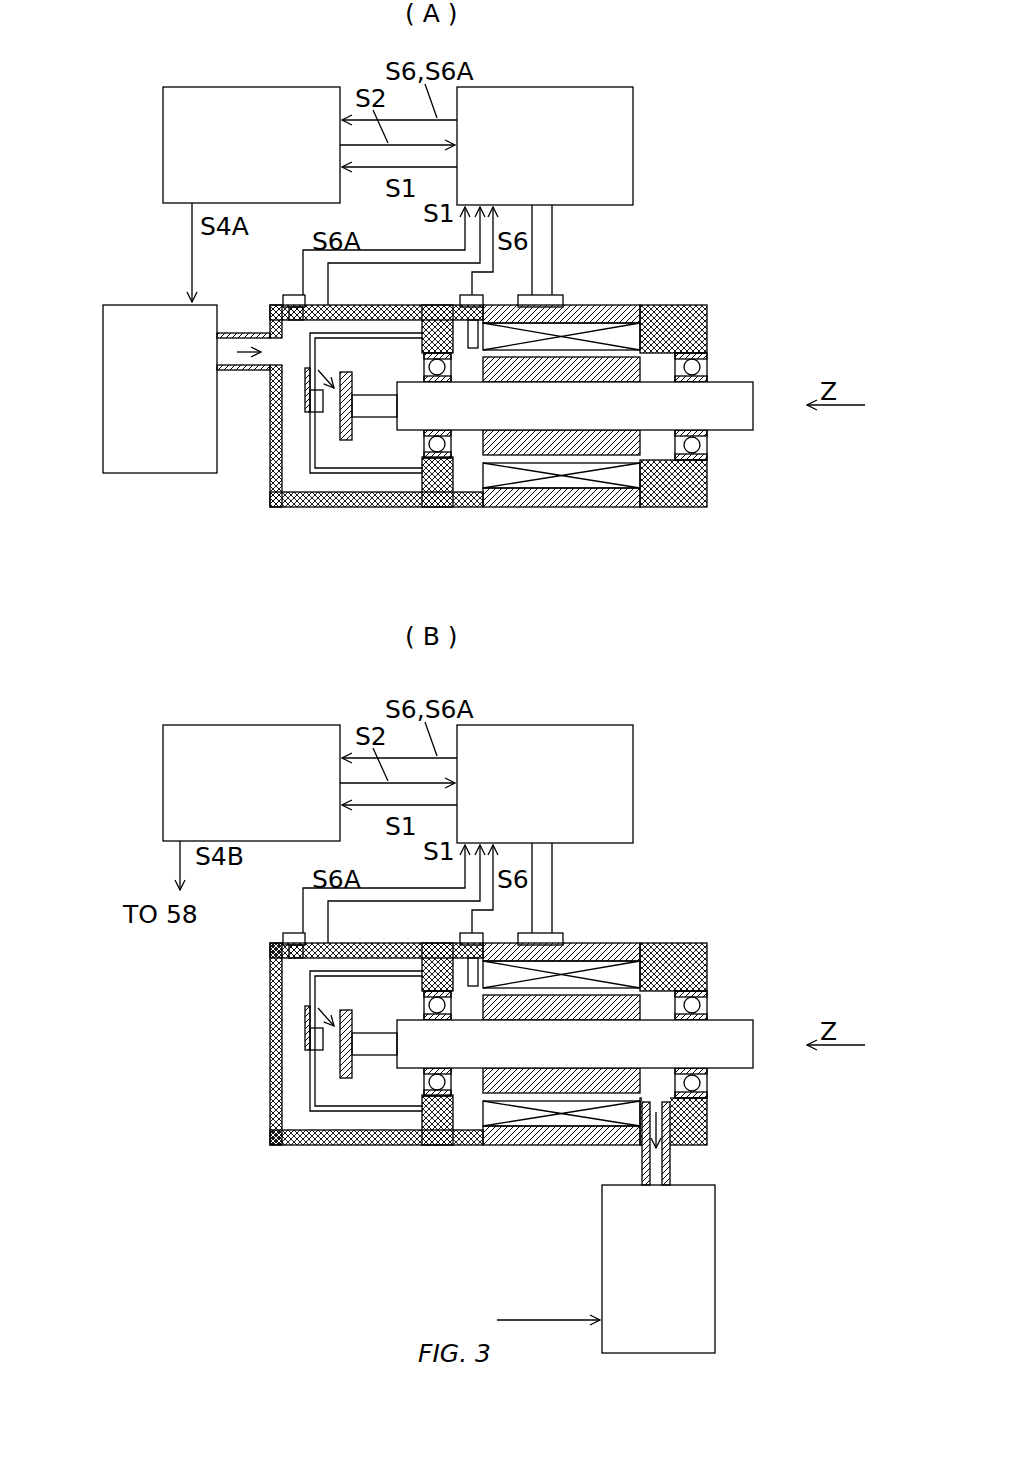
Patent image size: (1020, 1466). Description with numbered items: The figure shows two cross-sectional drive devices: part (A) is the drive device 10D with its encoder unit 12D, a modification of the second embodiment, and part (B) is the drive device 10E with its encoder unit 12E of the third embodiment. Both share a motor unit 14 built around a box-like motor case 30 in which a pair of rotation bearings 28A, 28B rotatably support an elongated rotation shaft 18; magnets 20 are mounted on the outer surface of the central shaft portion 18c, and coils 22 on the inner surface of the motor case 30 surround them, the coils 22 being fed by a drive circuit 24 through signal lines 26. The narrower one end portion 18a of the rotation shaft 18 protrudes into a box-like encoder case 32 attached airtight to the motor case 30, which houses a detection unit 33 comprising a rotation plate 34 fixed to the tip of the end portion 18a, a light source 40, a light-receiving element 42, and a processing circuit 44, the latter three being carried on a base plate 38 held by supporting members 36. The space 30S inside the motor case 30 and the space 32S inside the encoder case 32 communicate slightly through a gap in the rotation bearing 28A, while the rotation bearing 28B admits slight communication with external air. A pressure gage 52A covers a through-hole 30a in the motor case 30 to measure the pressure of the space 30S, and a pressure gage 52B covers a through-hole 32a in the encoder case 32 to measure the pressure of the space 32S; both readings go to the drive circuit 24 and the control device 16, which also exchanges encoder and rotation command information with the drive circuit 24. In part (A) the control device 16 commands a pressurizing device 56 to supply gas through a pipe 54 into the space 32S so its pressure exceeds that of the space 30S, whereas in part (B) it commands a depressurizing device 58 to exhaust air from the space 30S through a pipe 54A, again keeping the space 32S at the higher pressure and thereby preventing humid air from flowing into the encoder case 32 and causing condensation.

The control device 16 is at (163, 125).
The drive circuit 24 is at (633, 130).
The drive device 10D is at (791, 194).
The drive device 10E is at (794, 834).
The motor unit 14 is at (806, 327).
The encoder unit 12D is at (84, 450).
The encoder unit 12E is at (188, 1052).
The signal lines 26 is at (553, 247).
The motor case 30 is at (590, 305).
The through-hole 30a is at (555, 295).
The coils 22 is at (700, 305).
The magnets 20 is at (707, 338).
The rotation shaft 18 is at (745, 382).
The one end portion 18a is at (380, 418).
The shaft portion 18c is at (650, 462).
The rotation bearing 28A is at (445, 470).
The rotation bearing 28B is at (707, 455).
The encoder case 32 is at (269, 412).
The through-hole 32a is at (282, 302).
The detection unit 33 is at (204, 533).
The rotation plate 34 is at (335, 475).
The supporting members 36 is at (385, 500).
The base plate 38 is at (325, 470).
The light source 40 is at (298, 335).
The light-receiving element 42 is at (345, 440).
The processing circuit 44 is at (308, 413).
The pressure gage 52A is at (445, 264).
The pressure gage 52B is at (294, 293).
The space 32S is at (368, 303).
The space 30S is at (463, 316).
The pipe 54 is at (240, 371).
The pipe 54A is at (671, 1160).
The pressurizing device 56 is at (148, 475).
The depressurizing device 58 is at (601, 1237).